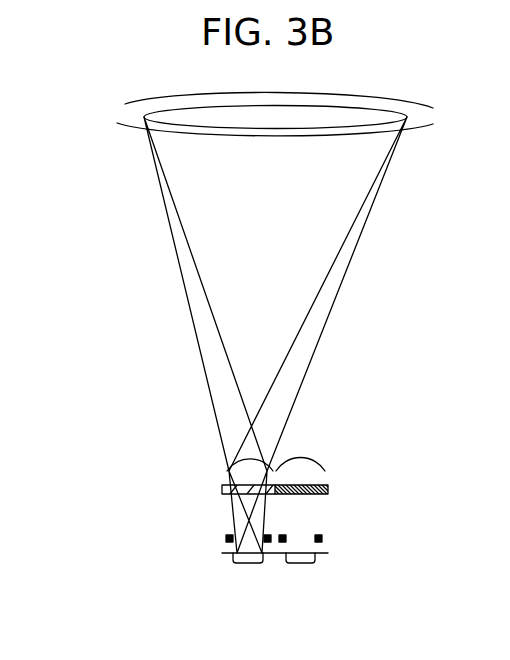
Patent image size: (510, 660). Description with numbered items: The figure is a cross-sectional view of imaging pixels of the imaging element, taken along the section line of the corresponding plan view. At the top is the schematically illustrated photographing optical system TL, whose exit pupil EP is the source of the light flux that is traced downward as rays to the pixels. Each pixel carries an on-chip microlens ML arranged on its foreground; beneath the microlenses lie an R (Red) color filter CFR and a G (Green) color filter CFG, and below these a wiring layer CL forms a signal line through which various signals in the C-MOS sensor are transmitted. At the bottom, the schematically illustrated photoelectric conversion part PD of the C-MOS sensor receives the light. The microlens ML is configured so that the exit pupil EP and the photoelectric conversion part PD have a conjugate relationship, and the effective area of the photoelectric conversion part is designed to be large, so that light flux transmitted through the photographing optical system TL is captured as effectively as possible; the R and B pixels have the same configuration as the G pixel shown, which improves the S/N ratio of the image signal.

The photographing optical system TL is at (132, 113).
The exit pupil EP is at (191, 116).
The on-chip microlens ML is at (250, 471).
The R (Red) color filter CFR is at (222, 489).
The G (Green) color filter CFG is at (330, 490).
The wiring layer CL is at (324, 540).
The photoelectric conversion part PD is at (249, 558).